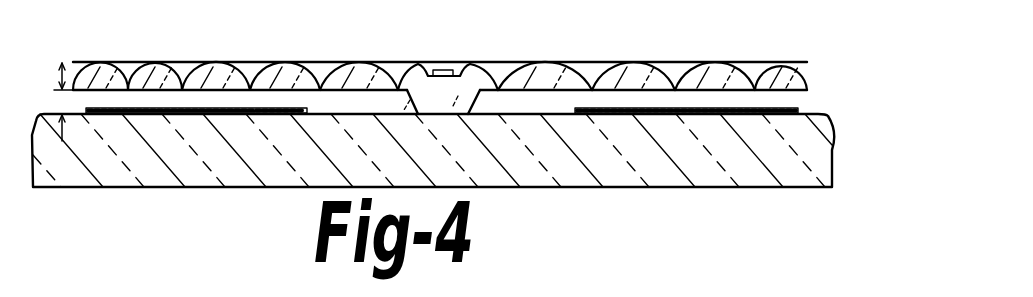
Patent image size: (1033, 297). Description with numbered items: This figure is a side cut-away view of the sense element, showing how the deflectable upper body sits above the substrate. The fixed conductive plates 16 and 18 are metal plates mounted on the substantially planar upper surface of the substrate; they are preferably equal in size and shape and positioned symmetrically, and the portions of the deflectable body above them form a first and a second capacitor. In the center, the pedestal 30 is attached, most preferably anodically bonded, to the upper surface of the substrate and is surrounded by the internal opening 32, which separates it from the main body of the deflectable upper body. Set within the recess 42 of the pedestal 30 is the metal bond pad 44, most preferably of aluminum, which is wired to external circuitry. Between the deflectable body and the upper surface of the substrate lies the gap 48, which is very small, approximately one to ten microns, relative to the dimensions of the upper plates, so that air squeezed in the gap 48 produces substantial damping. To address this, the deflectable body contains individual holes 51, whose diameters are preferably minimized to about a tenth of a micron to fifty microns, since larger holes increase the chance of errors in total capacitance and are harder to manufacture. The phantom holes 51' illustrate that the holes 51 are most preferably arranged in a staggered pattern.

The fixed conductive plate 16 is at (225, 114).
The fixed conductive plate 18 is at (794, 107).
The pedestal 30 is at (436, 113).
The internal opening 32 is at (397, 70).
The recess 42 is at (427, 67).
The metal bond pad 44 is at (491, 72).
The gap 48 is at (50, 101).
The individual holes 51 is at (442, 56).
The phantom holes 51' is at (439, 52).